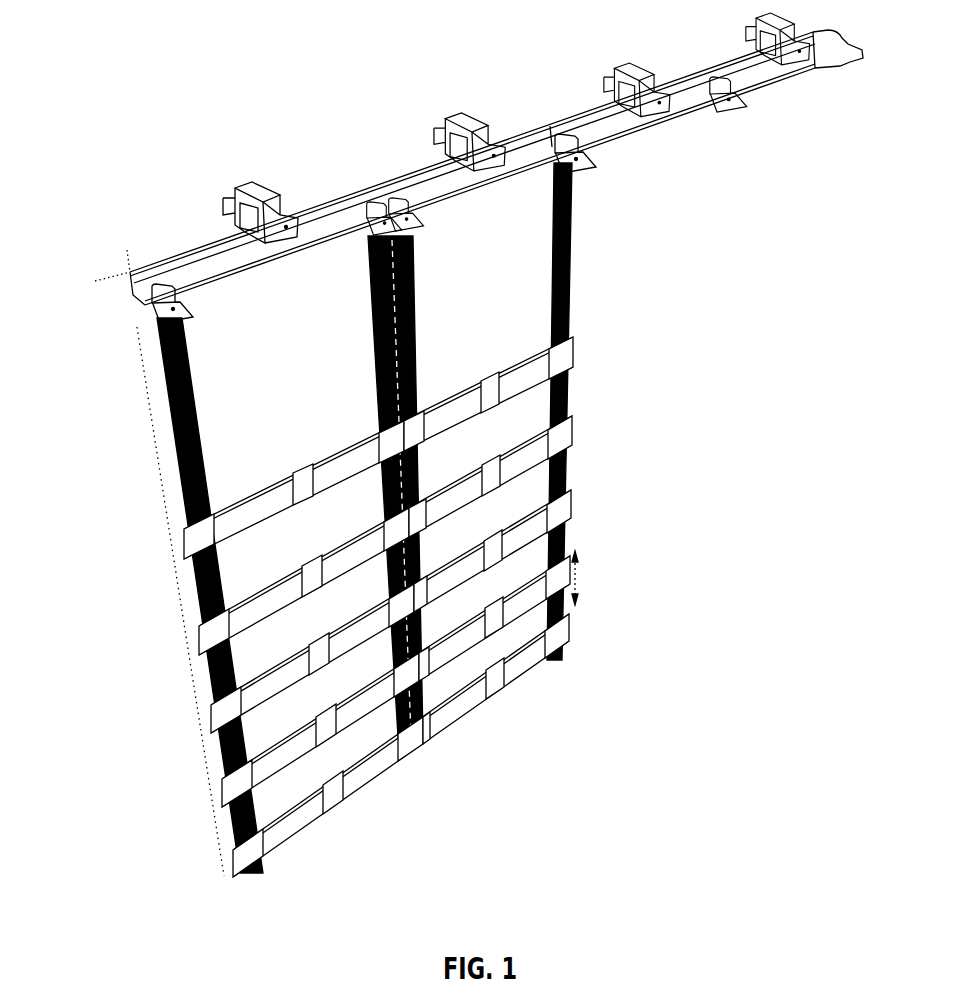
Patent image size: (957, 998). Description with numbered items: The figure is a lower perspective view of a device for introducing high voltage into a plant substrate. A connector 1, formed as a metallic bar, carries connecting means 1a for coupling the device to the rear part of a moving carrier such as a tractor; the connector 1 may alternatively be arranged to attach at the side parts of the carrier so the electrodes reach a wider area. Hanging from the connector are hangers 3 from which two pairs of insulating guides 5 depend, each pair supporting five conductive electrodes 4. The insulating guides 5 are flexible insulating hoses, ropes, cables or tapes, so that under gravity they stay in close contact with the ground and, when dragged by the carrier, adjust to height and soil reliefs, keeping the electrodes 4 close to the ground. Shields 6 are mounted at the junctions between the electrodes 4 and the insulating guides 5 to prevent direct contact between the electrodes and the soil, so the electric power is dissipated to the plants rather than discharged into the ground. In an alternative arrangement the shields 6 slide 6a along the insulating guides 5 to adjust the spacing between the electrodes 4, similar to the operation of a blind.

The connector 1 is at (333, 196).
The connecting means 1a is at (436, 118).
The hanger 3 is at (604, 163).
The conductive electrode 4 is at (538, 376).
The insulating guide 5 is at (145, 347).
The shield 6 is at (193, 632).
The slide 6a is at (594, 585).